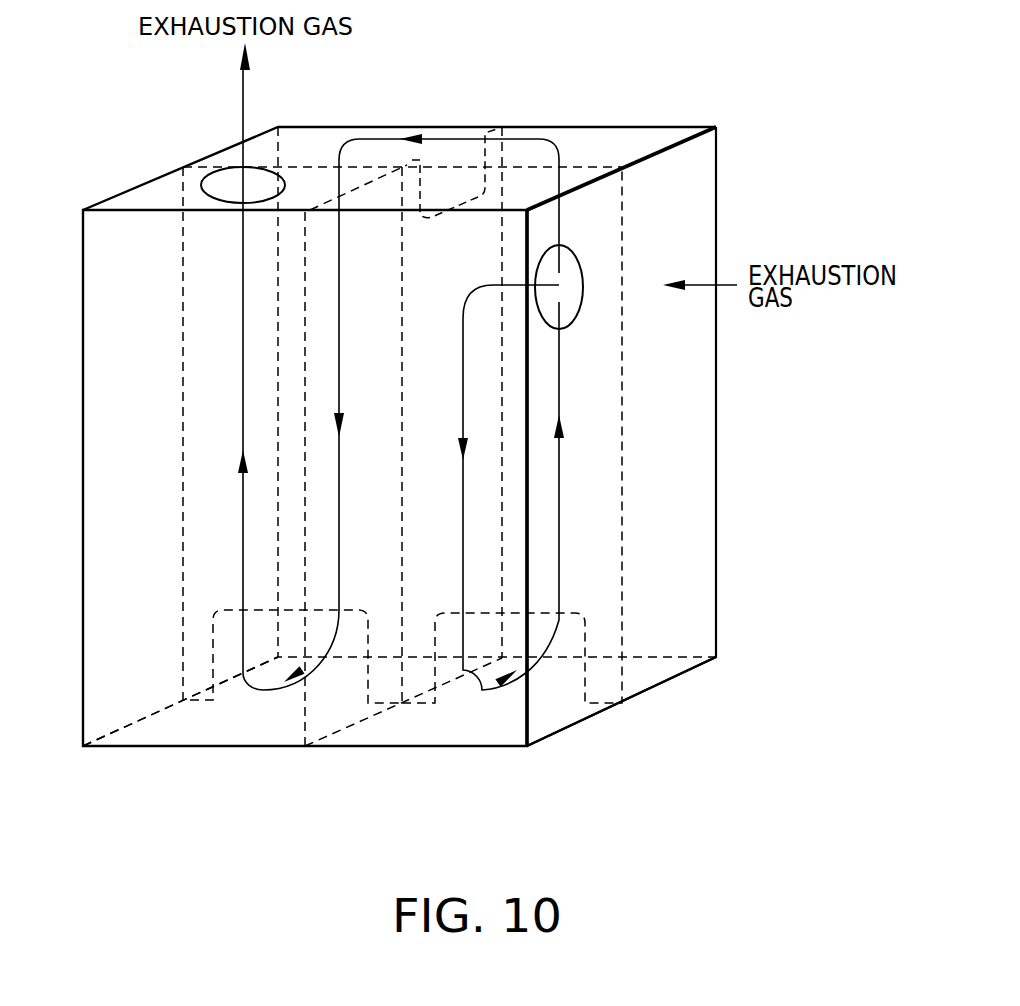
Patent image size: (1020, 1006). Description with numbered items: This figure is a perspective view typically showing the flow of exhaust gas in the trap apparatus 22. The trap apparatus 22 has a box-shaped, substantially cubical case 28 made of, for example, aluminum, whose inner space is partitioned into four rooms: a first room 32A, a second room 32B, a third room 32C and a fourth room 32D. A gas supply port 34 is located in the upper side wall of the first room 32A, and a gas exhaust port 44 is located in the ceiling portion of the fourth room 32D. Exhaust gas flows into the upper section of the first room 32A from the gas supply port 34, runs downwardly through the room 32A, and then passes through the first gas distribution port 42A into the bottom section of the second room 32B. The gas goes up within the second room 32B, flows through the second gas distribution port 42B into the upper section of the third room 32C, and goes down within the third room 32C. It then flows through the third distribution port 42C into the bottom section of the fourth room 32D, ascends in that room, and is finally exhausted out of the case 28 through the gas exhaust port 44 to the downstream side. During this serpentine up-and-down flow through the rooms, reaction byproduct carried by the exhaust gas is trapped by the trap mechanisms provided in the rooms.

The trap apparatus 22 is at (223, 838).
The case 28 is at (81, 522).
The first room 32A is at (448, 728).
The second room 32B is at (655, 673).
The third room 32C is at (314, 140).
The fourth room 32D is at (158, 727).
The gas supply port 34 is at (592, 256).
The first gas distribution port 42A is at (573, 657).
The second gas distribution port 42B is at (449, 172).
The third distribution port 42C is at (226, 632).
The gas exhaust port 44 is at (211, 168).